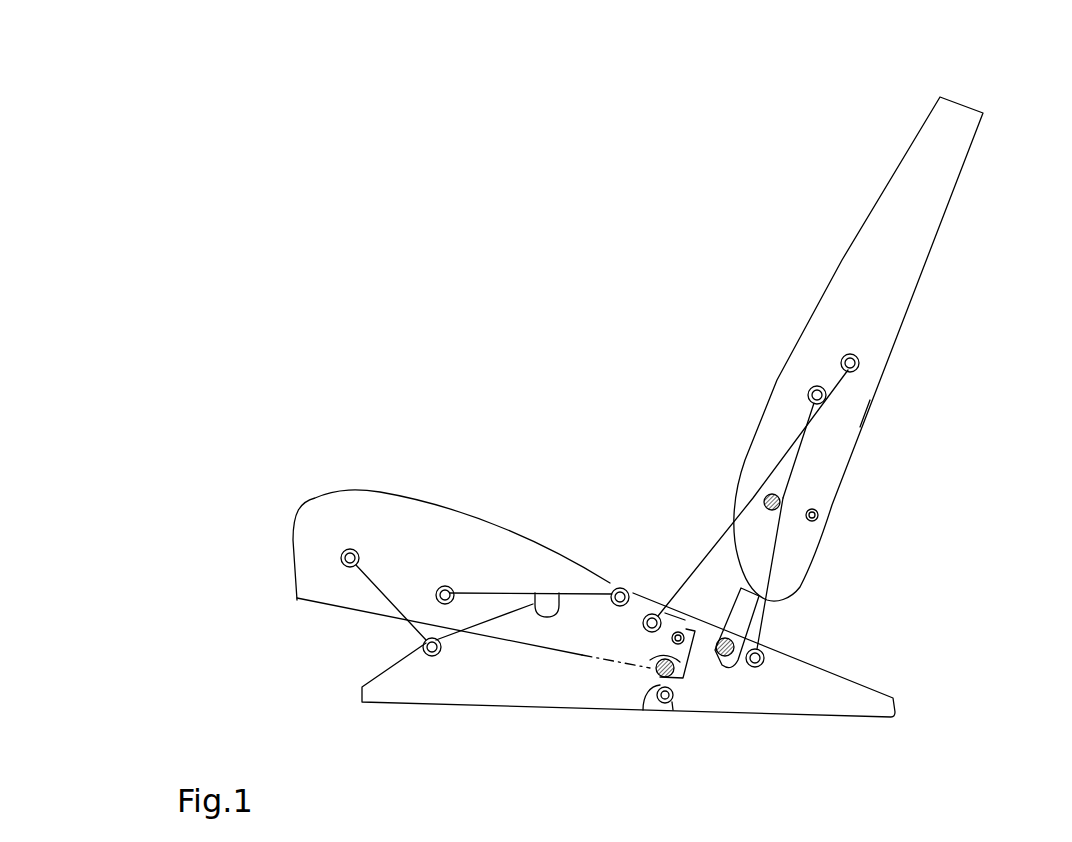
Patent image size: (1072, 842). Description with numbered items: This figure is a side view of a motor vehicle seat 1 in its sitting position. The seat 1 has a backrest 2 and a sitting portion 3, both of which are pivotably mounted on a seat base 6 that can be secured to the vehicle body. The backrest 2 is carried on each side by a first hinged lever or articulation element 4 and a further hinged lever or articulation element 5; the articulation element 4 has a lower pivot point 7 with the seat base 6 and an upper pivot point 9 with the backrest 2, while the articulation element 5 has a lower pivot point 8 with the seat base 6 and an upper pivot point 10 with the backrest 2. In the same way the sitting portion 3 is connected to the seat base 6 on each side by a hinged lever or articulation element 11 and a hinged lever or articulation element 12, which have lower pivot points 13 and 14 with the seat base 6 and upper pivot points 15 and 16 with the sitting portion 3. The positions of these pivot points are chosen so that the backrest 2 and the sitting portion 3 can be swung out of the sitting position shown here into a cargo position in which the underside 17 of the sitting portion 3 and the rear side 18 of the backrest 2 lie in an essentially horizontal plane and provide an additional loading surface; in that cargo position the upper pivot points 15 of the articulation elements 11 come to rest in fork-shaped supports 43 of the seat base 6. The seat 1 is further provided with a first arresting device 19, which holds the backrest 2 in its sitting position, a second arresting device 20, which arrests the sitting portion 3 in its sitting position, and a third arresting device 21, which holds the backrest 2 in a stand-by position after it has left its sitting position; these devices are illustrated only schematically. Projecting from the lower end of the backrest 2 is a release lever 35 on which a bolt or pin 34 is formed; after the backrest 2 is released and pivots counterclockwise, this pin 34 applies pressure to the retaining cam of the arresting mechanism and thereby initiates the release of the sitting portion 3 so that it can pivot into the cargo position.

The motor vehicle seat 1 is at (607, 266).
The backrest 2 is at (925, 223).
The sitting portion 3 is at (376, 510).
The first hinged lever or articulation element 4 is at (693, 567).
The further hinged lever or articulation element 5 is at (763, 620).
The seat base 6 is at (495, 690).
The lower pivot point 7 is at (654, 613).
The lower pivot point 8 is at (765, 656).
The upper pivot point 9 is at (860, 365).
The upper pivot point 10 is at (808, 392).
The hinged lever or articulation element 11 is at (382, 593).
The hinged lever or articulation element 12 is at (508, 590).
The lower pivot point 13 is at (430, 657).
The lower pivot point 14 is at (617, 588).
The upper pivot point 15 is at (343, 551).
The upper pivot point 16 is at (452, 586).
The underside 17 is at (380, 622).
The rear side 18 is at (867, 423).
The first arresting device 19 is at (805, 504).
The second arresting device 20 is at (643, 712).
The third arresting device 21 is at (709, 640).
The bolt or pin 34 is at (731, 658).
The release lever 35 is at (737, 614).
The fork-shaped supports 43 is at (549, 617).